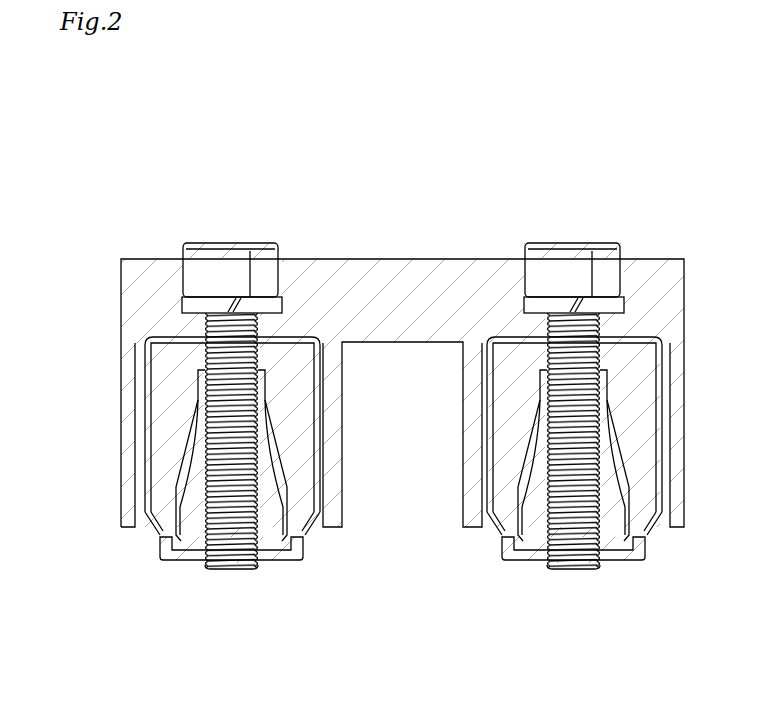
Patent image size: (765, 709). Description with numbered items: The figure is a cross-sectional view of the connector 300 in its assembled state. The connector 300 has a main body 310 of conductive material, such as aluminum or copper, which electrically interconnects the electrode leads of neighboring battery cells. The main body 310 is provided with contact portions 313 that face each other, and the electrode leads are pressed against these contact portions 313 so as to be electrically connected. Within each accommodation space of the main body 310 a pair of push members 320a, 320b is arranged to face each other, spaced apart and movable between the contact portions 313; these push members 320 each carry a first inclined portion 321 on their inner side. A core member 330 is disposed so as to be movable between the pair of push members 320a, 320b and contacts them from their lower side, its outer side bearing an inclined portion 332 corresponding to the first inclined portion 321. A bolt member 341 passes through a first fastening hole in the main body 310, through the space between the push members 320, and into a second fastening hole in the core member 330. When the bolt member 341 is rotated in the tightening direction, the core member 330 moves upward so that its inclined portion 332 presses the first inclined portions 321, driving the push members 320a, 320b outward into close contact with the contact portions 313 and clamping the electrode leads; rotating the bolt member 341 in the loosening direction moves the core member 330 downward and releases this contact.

The connector 300 is at (150, 136).
The main body 310 is at (137, 258).
The contact portion 313 is at (138, 524).
The push member 320 is at (227, 503).
The push member 320a is at (158, 527).
The push member 320b is at (304, 524).
The first inclined portion 321 is at (277, 437).
The core member 330 is at (185, 553).
The inclined portion 332 is at (267, 440).
The bolt member 341 is at (243, 243).